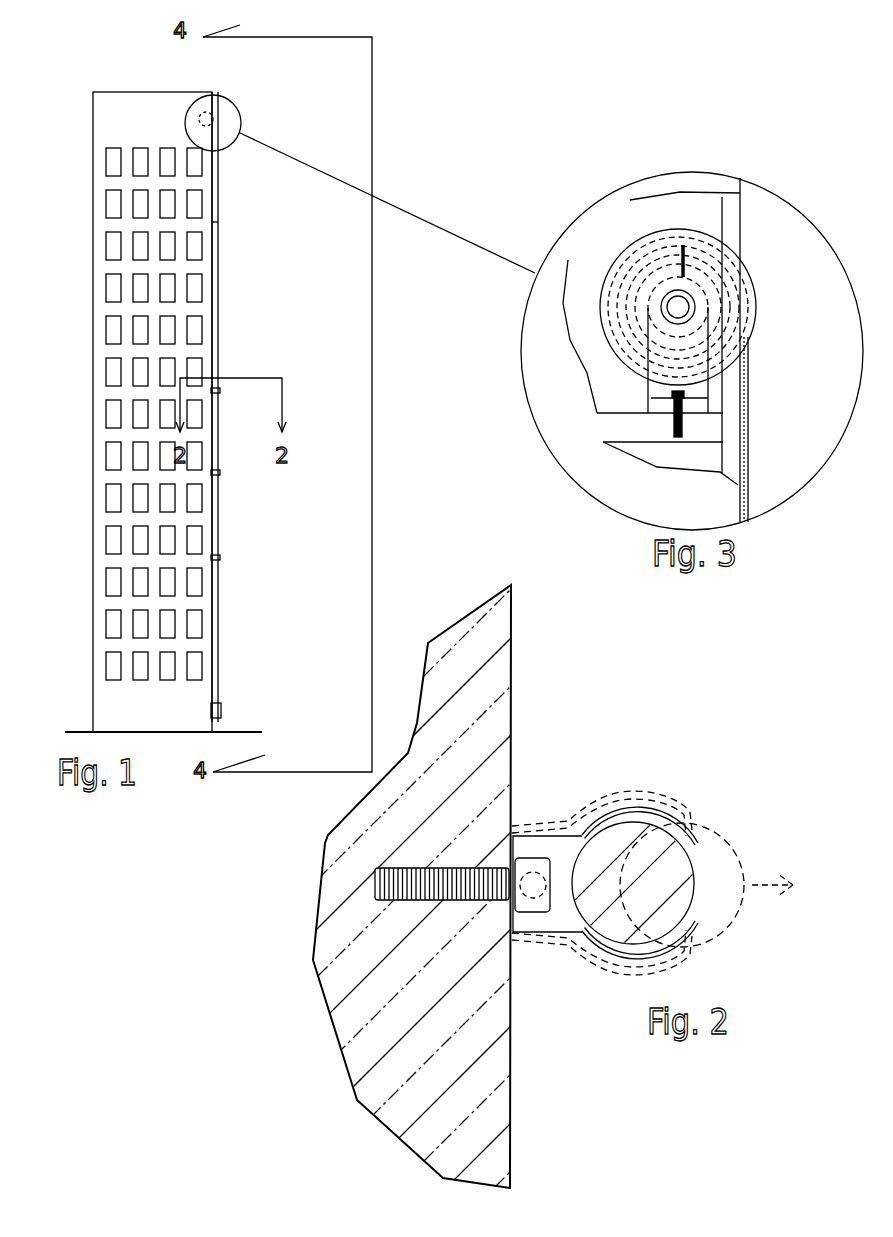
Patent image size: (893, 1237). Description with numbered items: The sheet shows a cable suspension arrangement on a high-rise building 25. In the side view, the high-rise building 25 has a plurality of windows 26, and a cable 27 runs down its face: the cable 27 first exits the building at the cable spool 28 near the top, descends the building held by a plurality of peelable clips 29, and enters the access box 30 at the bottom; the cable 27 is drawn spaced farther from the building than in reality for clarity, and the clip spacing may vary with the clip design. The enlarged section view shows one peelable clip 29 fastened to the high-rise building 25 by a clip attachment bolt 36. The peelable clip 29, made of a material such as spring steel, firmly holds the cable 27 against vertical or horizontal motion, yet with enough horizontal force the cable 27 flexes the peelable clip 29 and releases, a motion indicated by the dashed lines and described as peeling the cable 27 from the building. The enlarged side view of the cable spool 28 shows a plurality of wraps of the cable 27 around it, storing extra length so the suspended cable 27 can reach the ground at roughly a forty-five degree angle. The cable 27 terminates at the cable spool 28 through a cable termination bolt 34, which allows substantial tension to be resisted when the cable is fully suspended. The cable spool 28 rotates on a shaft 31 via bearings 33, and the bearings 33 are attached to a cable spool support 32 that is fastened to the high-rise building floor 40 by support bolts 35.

In FIG. 1, the high-rise building 25 is at (150, 112).
In FIG. 2, the high-rise building 25 is at (472, 703).
In FIG. 1, the windows 26 is at (113, 208).
In FIG. 1, the cable 27 is at (222, 300).
In FIG. 3, the cable 27 is at (750, 453).
In FIG. 2, the cable 27 is at (665, 900).
In FIG. 1, the cable spool 28 is at (213, 122).
In FIG. 3, the cable spool 28 is at (722, 238).
In FIG. 1, the peelable clips 29 is at (220, 392).
In FIG. 2, the peelable clips 29 is at (580, 838).
In FIG. 1, the access box 30 is at (223, 712).
In FIG. 3, the shaft 31 is at (655, 318).
In FIG. 3, the cable spool support 32 is at (712, 390).
In FIG. 3, the bearings 33 is at (660, 313).
In FIG. 3, the cable termination bolt 34 is at (682, 247).
In FIG. 3, the support bolts 35 is at (680, 417).
In FIG. 2, the clip attachment bolt 36 is at (427, 867).
In FIG. 3, the high-rise building floor 40 is at (637, 428).